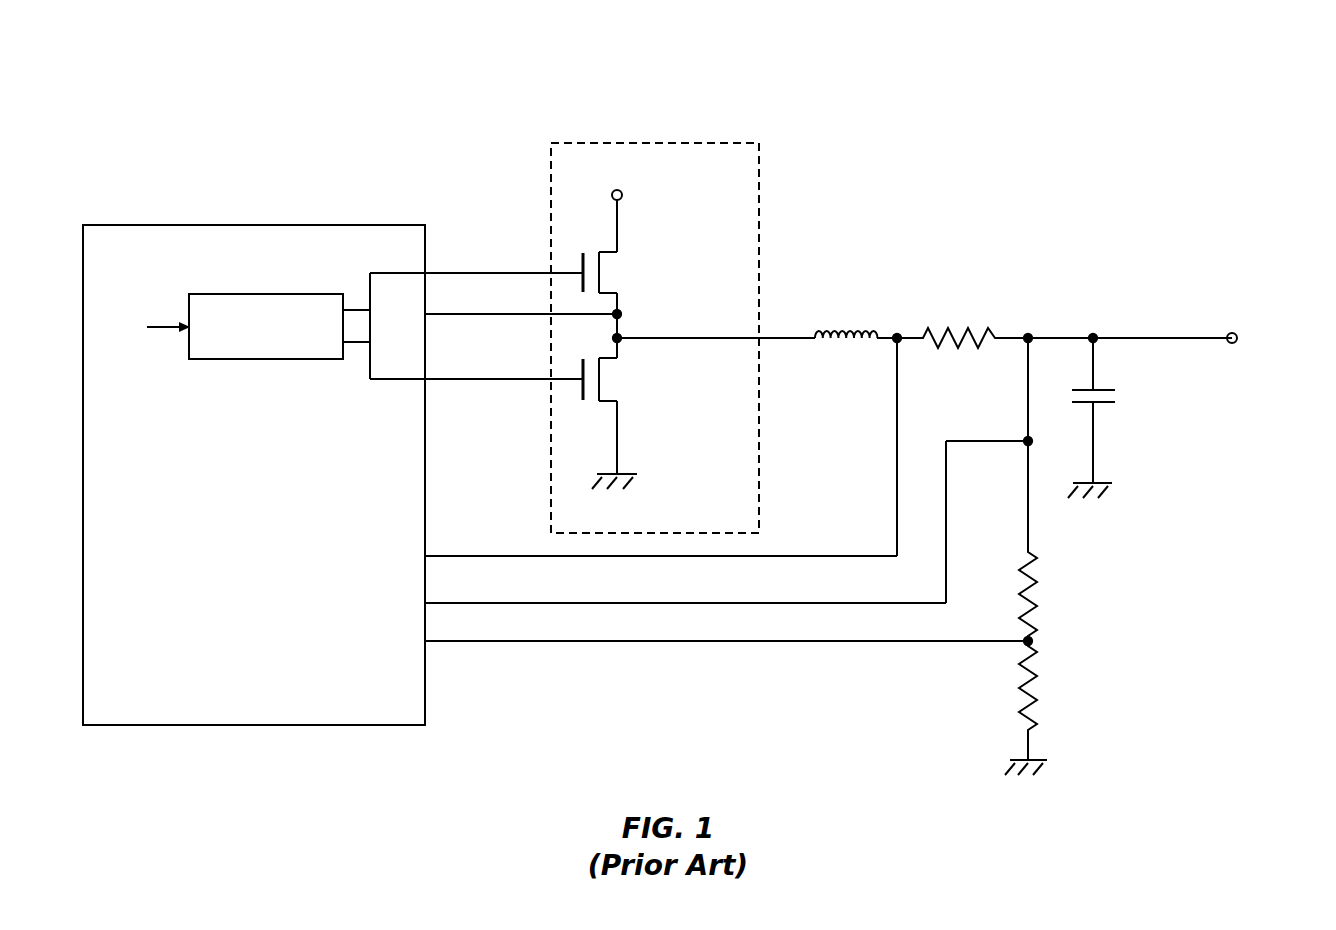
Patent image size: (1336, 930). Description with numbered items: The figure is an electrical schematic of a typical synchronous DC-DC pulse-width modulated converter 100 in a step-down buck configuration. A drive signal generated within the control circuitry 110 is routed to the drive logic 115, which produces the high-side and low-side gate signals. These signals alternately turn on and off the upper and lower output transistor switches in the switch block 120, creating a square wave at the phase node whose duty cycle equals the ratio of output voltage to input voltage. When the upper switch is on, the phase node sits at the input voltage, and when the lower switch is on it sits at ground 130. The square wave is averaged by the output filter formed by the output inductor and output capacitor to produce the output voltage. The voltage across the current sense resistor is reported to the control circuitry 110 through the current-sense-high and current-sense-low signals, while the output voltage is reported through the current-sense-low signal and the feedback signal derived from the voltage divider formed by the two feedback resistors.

The synchronous DC-DC pulse-width modulated converter 100 is at (1022, 80).
The control circuitry 110 is at (254, 225).
The drive logic 115 is at (268, 294).
The switch block 120 is at (653, 143).
The ground 130 is at (630, 480).